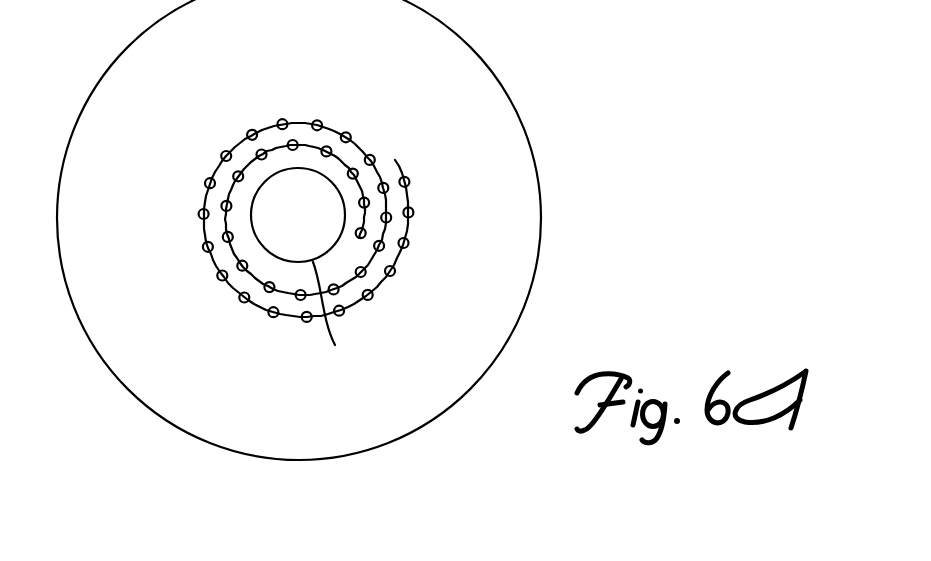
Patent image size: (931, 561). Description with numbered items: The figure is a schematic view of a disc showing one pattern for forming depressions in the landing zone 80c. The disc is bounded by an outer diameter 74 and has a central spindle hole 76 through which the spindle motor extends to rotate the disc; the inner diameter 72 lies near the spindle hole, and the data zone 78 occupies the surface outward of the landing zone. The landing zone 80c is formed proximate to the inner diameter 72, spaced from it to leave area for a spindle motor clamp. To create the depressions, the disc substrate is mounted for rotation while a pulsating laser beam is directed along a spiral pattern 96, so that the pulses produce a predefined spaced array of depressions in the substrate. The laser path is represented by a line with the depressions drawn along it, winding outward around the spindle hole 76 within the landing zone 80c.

The outer diameter 74 is at (533, 158).
The data zone 78 is at (474, 270).
The spindle hole 76 is at (315, 231).
The spiral pattern 96 is at (374, 149).
The landing zone 80c is at (294, 114).
The inner diameter 72 is at (341, 322).